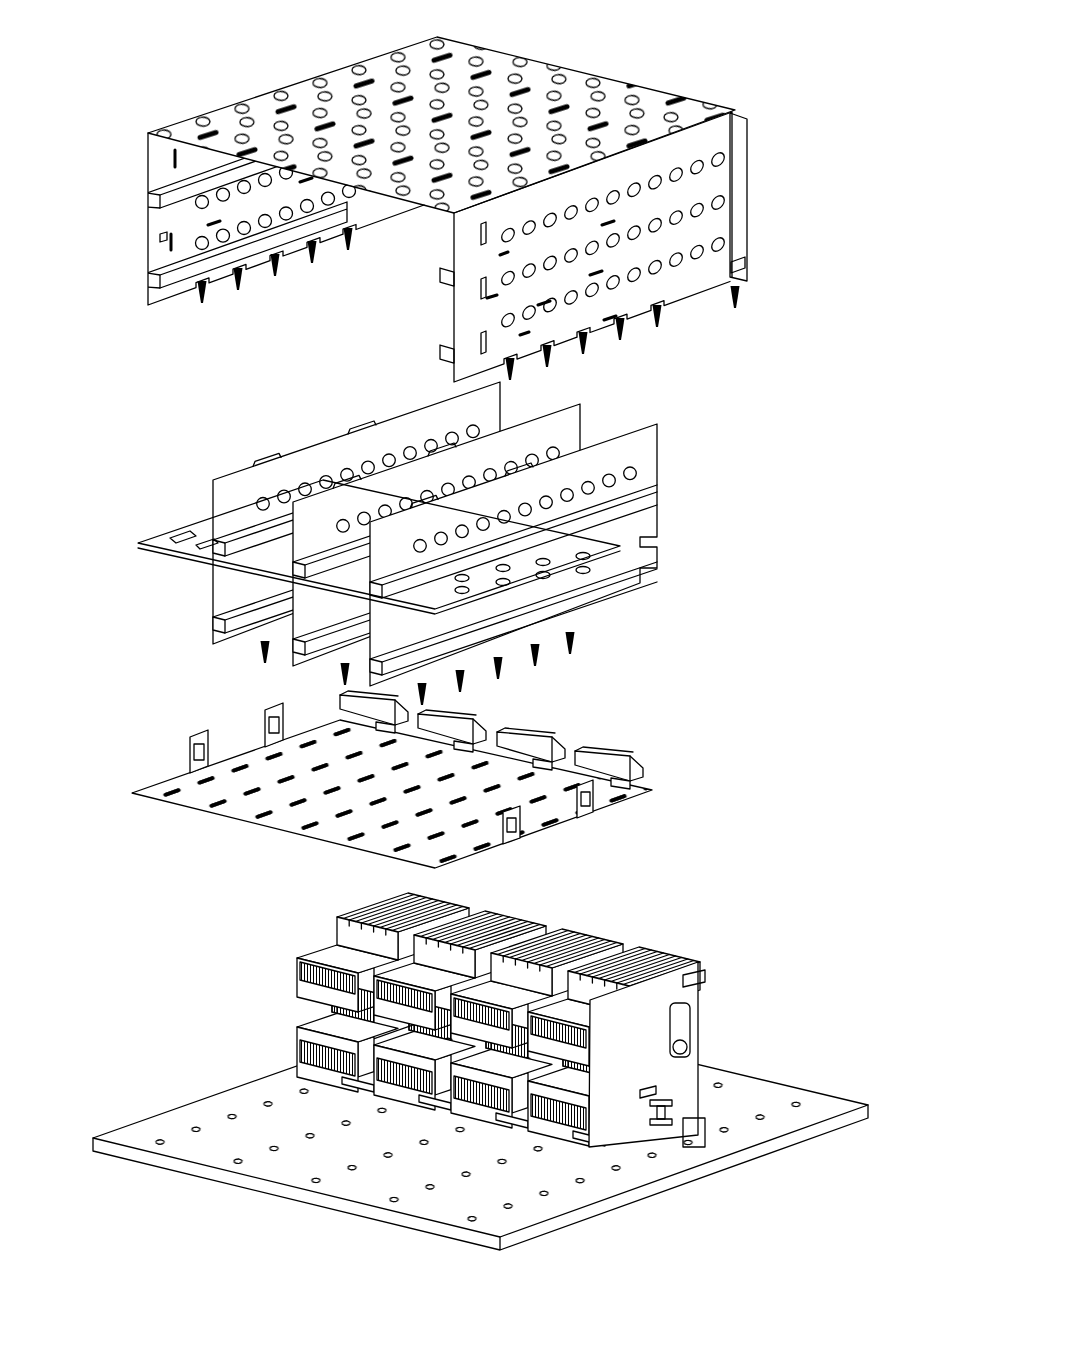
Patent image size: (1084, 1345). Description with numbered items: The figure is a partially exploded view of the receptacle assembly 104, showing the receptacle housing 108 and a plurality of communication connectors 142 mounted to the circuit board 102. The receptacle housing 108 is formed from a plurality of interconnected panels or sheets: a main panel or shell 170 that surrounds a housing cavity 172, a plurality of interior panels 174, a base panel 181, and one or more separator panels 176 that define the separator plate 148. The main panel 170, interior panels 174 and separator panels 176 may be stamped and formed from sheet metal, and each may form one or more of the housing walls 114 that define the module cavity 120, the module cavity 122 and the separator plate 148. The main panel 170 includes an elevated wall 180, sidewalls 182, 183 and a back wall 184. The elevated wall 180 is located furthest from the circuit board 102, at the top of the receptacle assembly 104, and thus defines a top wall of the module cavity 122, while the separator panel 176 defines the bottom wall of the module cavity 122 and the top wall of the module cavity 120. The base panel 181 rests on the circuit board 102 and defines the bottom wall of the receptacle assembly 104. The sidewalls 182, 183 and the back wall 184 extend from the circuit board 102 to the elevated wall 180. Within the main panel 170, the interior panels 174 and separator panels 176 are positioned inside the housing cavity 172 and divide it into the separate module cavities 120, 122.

The circuit board 102 is at (808, 1098).
The receptacle assembly 104 is at (205, 62).
The receptacle housing 108 is at (805, 850).
The housing walls 114 is at (715, 223).
The module cavity 120 is at (230, 585).
The module cavity 122 is at (200, 552).
The communication connectors 142 is at (720, 973).
The separator plate 148 is at (555, 580).
The main panel 170 is at (707, 55).
The housing cavity 172 is at (267, 333).
The interior panels 174 is at (316, 467).
The separator panels 176 is at (178, 535).
The elevated wall 180 is at (565, 75).
The base panel 181 is at (148, 782).
The sidewall 182 is at (370, 222).
The sidewall 183 is at (680, 282).
The back wall 184 is at (748, 175).